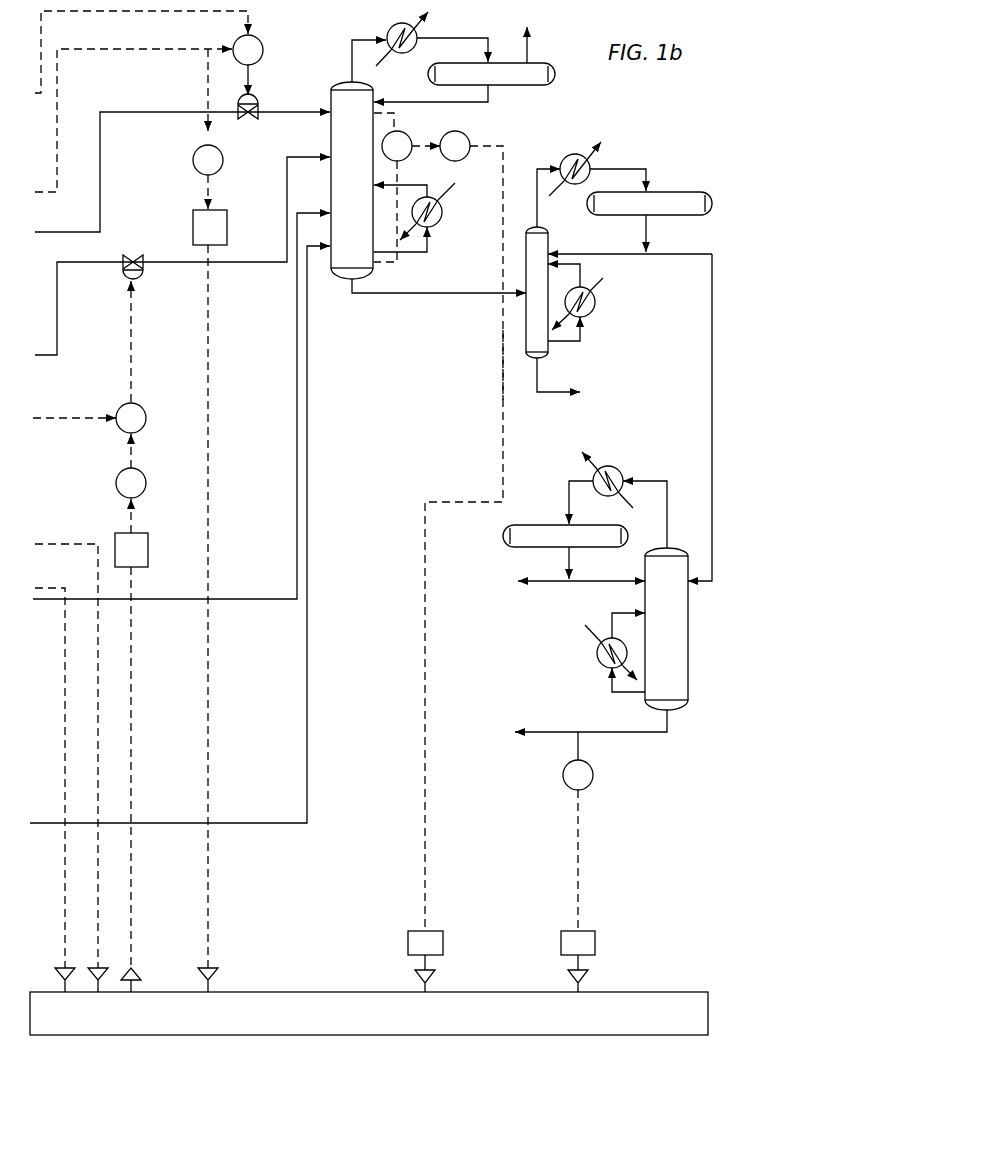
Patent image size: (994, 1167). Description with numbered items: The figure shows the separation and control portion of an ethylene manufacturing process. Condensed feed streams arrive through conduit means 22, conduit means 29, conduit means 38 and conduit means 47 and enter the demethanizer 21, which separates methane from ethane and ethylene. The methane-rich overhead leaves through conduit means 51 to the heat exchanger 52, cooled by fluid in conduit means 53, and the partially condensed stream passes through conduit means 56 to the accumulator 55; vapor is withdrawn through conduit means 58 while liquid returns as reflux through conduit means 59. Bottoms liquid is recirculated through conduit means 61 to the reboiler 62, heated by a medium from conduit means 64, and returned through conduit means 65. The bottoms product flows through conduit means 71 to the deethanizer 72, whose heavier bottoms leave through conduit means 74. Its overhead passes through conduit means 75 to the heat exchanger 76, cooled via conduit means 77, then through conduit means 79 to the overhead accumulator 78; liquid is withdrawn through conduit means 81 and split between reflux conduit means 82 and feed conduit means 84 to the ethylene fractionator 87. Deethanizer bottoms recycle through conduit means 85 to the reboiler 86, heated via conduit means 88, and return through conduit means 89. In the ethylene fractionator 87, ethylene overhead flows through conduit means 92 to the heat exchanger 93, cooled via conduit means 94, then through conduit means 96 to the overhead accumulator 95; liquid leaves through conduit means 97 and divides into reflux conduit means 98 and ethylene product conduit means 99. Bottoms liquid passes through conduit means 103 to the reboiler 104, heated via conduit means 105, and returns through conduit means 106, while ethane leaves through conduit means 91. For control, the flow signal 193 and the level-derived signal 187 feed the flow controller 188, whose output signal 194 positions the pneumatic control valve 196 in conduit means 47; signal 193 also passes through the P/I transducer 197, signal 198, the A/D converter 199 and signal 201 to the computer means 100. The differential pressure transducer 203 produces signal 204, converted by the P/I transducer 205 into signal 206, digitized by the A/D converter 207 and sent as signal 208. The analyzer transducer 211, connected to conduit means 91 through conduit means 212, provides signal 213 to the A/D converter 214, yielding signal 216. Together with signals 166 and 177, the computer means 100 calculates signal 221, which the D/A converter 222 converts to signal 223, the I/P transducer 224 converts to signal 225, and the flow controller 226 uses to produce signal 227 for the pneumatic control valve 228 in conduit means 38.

The demethanizer 21 is at (328, 96).
The output signal 193 is at (121, 46).
The output signal 187 is at (181, 12).
The flow controller 188 is at (265, 50).
The output signal 194 is at (251, 67).
The pneumatic control valve 196 is at (259, 100).
The conduit means 47 is at (101, 188).
The P/I transducer 197 is at (225, 160).
The signal 198 is at (211, 190).
The A/D converter 199 is at (228, 222).
The signal 201 is at (211, 300).
The conduit means 38 is at (59, 323).
The pneumatic control valve 228 is at (145, 273).
The output signal 227 is at (135, 299).
The conduit means 29 is at (297, 362).
The flow controller 226 is at (148, 418).
The signal 225 is at (134, 452).
The I/P transducer 224 is at (148, 483).
The signal 223 is at (134, 518).
The D/A converter 222 is at (149, 550).
The signal 221 is at (134, 577).
The signal 177 is at (52, 541).
The signal 166 is at (52, 587).
The conduit means 22 is at (308, 801).
The conduit means 51 is at (351, 45).
The heat exchanger 52 is at (387, 28).
The conduit means 53 is at (386, 59).
The conduit means 56 is at (453, 38).
The accumulator 55 is at (526, 88).
The conduit means 58 is at (530, 42).
The conduit means 59 is at (483, 104).
The differential pressure transducer 203 is at (400, 133).
The output signal 204 is at (448, 138).
The P/I transducer 205 is at (463, 158).
The conduit means 65 is at (410, 180).
The conduit means 64 is at (408, 192).
The reboiler 62 is at (443, 212).
The conduit means 61 is at (431, 249).
The conduit means 71 is at (395, 296).
The deethanizer column 72 is at (549, 235).
The conduit means 75 is at (547, 169).
The heat exchanger 76 is at (575, 149).
The conduit means 77 is at (556, 190).
The conduit means 79 is at (633, 167).
The overhead accumulator 78 is at (680, 190).
The conduit means 81 is at (648, 232).
The conduit means 82 is at (635, 252).
The conduit means 84 is at (692, 256).
The conduit means 89 is at (583, 270).
The reboiler 86 is at (597, 303).
The conduit means 88 is at (600, 286).
The conduit means 85 is at (565, 344).
The conduit means 74 is at (551, 395).
The signal 206 is at (502, 372).
The ethylene fractionator 87 is at (642, 580).
The conduit means 92 is at (653, 478).
The heat exchanger 93 is at (603, 464).
The conduit means 94 is at (616, 502).
The conduit means 96 is at (565, 500).
The overhead accumulator 95 is at (499, 536).
The conduit means 97 is at (565, 560).
The conduit means 98 is at (581, 584).
The conduit means 99 is at (543, 584).
The conduit means 106 is at (610, 612).
The reboiler 104 is at (595, 653).
The conduit means 105 is at (588, 633).
The conduit means 103 is at (609, 693).
The conduit means 91 is at (670, 716).
The conduit means 212 is at (582, 745).
The analyzer transducer 211 is at (596, 775).
The output signal 213 is at (582, 820).
The A/D converter 214 is at (597, 943).
The signal 216 is at (574, 959).
The A/D converter 207 is at (404, 942).
The signal 208 is at (420, 968).
The computer means 100 is at (652, 991).